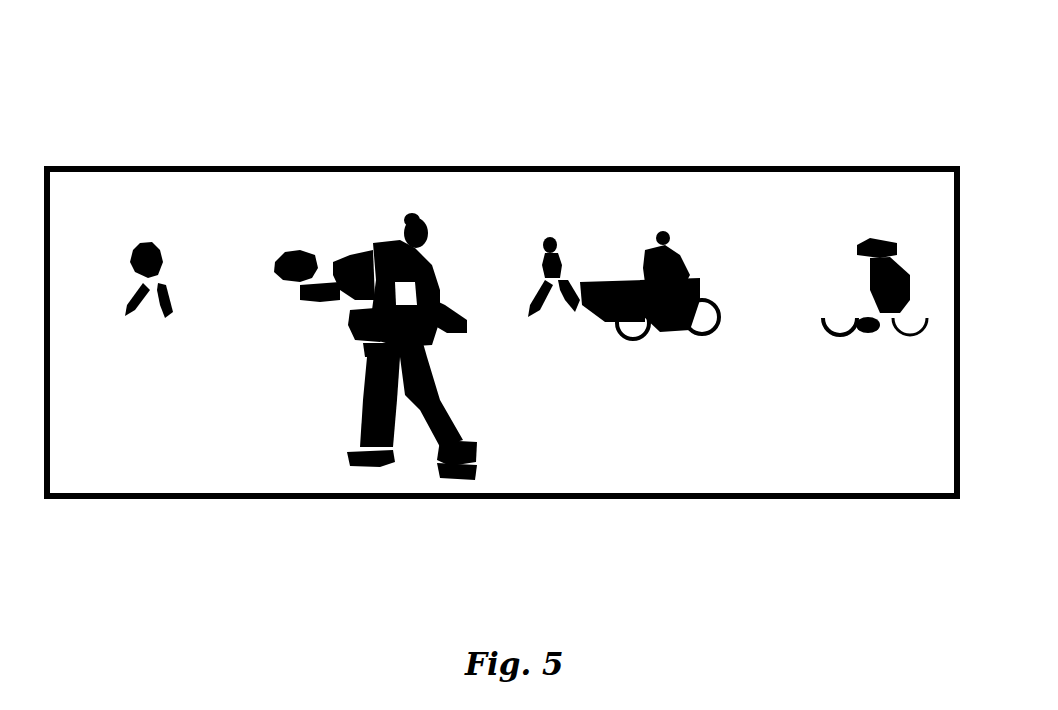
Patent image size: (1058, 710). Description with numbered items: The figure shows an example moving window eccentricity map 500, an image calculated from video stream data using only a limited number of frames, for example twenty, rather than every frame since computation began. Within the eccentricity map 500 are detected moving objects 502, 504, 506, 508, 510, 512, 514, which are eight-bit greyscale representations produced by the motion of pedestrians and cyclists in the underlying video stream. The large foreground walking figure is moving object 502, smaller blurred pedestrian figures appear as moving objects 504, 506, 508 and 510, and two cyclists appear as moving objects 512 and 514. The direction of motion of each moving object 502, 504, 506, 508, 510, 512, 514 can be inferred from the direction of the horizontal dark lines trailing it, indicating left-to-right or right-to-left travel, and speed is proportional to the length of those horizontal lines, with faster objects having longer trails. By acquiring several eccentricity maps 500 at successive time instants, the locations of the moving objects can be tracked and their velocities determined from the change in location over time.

The moving window eccentricity map 500 is at (570, 46).
The moving object 502 is at (362, 375).
The moving object 504 is at (137, 256).
The moving object 506 is at (280, 256).
The moving object 508 is at (547, 270).
The moving object 510 is at (605, 257).
The moving object 512 is at (663, 258).
The moving object 514 is at (887, 247).